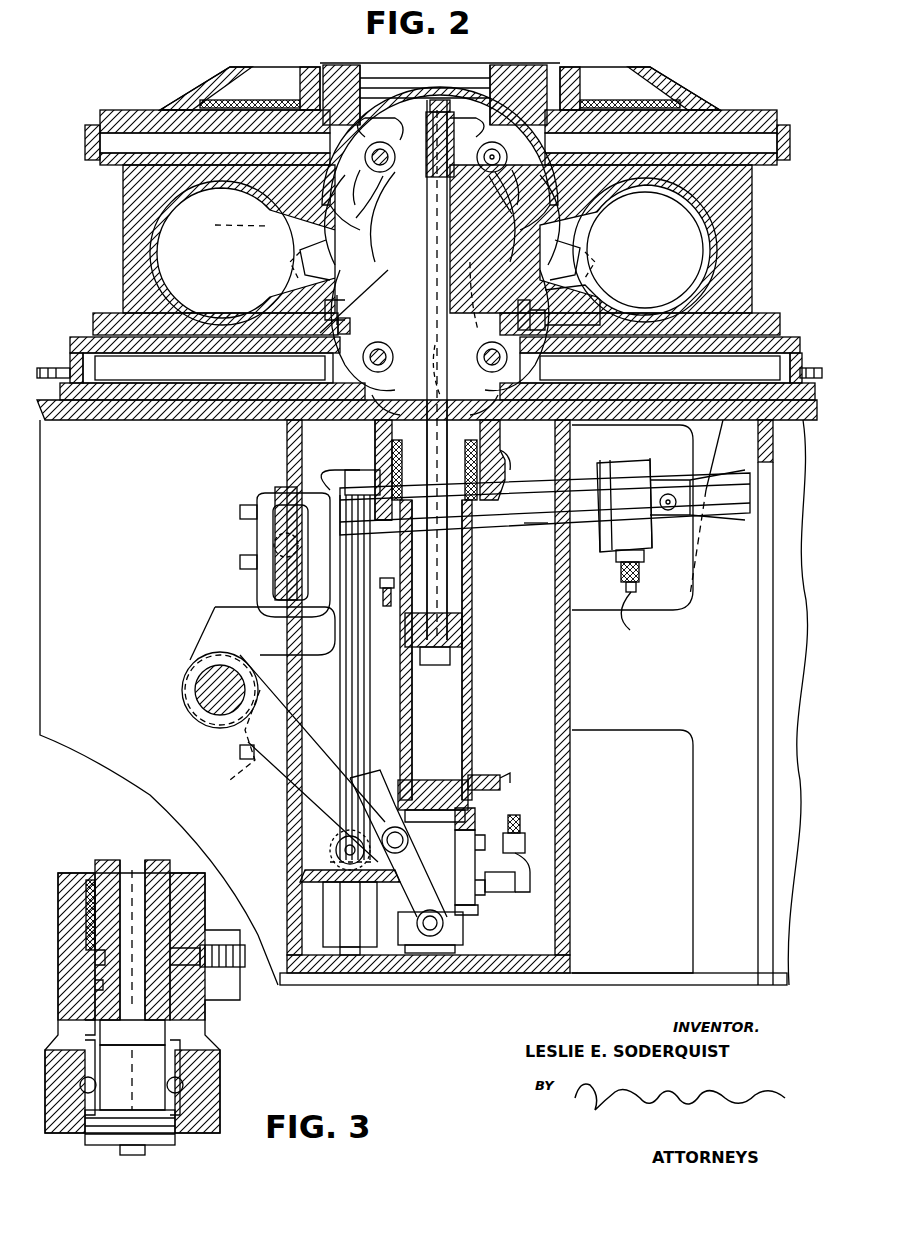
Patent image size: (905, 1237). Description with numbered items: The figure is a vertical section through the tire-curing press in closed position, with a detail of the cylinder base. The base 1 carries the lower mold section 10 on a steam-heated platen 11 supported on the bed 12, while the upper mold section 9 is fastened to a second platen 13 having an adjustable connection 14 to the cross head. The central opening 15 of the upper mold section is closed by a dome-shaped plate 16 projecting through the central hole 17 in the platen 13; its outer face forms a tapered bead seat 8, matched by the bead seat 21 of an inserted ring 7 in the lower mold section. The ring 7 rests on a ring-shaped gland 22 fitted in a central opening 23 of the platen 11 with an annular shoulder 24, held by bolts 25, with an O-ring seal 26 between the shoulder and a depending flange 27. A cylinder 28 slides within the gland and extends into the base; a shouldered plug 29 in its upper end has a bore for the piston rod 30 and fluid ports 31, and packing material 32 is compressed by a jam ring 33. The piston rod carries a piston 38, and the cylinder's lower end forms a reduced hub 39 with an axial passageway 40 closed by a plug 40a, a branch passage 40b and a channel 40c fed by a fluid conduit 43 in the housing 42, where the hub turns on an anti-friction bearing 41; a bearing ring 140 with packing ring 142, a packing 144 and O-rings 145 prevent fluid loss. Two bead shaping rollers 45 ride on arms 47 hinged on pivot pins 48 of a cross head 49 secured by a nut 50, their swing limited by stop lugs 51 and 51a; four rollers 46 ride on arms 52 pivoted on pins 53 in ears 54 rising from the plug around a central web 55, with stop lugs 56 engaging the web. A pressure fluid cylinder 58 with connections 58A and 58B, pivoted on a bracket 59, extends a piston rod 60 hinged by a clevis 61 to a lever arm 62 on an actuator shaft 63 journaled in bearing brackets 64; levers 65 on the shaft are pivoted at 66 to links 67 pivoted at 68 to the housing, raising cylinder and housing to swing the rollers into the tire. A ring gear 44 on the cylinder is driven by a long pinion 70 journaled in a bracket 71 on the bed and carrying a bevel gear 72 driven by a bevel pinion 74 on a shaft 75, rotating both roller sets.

In FIG. 2, the base 1 is at (785, 930).
In FIG. 2, the inserted ring 7 is at (361, 293).
In FIG. 2, the bead seat 8 is at (620, 215).
In FIG. 2, the upper mold section 9 is at (752, 207).
In FIG. 2, the lower mold section 10 is at (123, 292).
In FIG. 2, the steam-heated platen 11 is at (68, 340).
In FIG. 2, the bed 12 is at (40, 440).
In FIG. 2, the second steam-heated platen 13 is at (112, 113).
In FIG. 2, the adjustable connection 14 is at (528, 75).
In FIG. 2, the central opening 15 is at (322, 182).
In FIG. 2, the dome-shaped plate 16 is at (468, 74).
In FIG. 2, the central hole 17 is at (560, 108).
In FIG. 2, the bead seat 21 is at (575, 300).
In FIG. 2, the ring-shaped gland 22 is at (504, 452).
In FIG. 2, the central opening 23 is at (540, 370).
In FIG. 2, the annular shoulder 24 is at (338, 350).
In FIG. 2, the bolts 25 is at (518, 312).
In FIG. 2, the O-ring seal 26 is at (350, 318).
In FIG. 2, the depending flange 27 is at (560, 330).
In FIG. 2, the cylinder 28 is at (472, 696).
In FIG. 2, the shouldered plug 29 is at (378, 420).
In FIG. 2, the piston rod 30 is at (447, 590).
In FIG. 2, the fluid ports 31 is at (392, 445).
In FIG. 2, the packing material 32 is at (480, 470).
In FIG. 2, the jam ring 33 is at (498, 430).
In FIG. 2, the piston 38 is at (462, 633).
In FIG. 2, the hub portion 39 is at (468, 825).
In FIG. 3, the hub portion 39 is at (160, 872).
In FIG. 2, the axial passageway 40 is at (440, 780).
In FIG. 3, the axial passageway 40 is at (132, 885).
In FIG. 2, the plug 40a is at (440, 950).
In FIG. 3, the plug 40a is at (145, 1152).
In FIG. 3, the branch passage 40b is at (165, 948).
In FIG. 3, the channel 40c is at (92, 962).
In FIG. 2, the anti-friction bearing 41 is at (462, 852).
In FIG. 3, the anti-friction bearing 41 is at (185, 1080).
In FIG. 2, the housing 42 is at (465, 906).
In FIG. 3, the housing 42 is at (205, 1020).
In FIG. 2, the fluid conduit 43 is at (500, 893).
In FIG. 3, the fluid conduit 43 is at (240, 970).
In FIG. 2, the ring gear 44 is at (500, 781).
In FIG. 2, the bead shaping rollers 45 is at (300, 255).
In FIG. 2, the bead shaping rollers 46 is at (338, 240).
In FIG. 2, the arms 47 is at (355, 222).
In FIG. 2, the pivot pins 48 is at (380, 170).
In FIG. 2, the cross head 49 is at (452, 152).
In FIG. 2, the nut 50 is at (424, 128).
In FIG. 2, the stop lugs 51 is at (393, 132).
In FIG. 2, the stop lugs 51a is at (488, 172).
In FIG. 2, the arms 52 is at (372, 290).
In FIG. 2, the pins 53 is at (378, 342).
In FIG. 2, the ears 54 is at (488, 300).
In FIG. 2, the central connecting web 55 is at (436, 342).
In FIG. 2, the stop lugs 56 is at (372, 395).
In FIG. 2, the pressure fluid cylinder 58 is at (545, 505).
In FIG. 2, the fluid connection 58A is at (392, 604).
In FIG. 2, the fluid connection 58B is at (647, 594).
In FIG. 2, the bracket 59 is at (702, 485).
In FIG. 2, the piston rod 60 is at (320, 500).
In FIG. 2, the clevis 61 is at (285, 510).
In FIG. 2, the lever arm 62 is at (213, 627).
In FIG. 2, the actuator shaft 63 is at (205, 682).
In FIG. 2, the bearing brackets 64 is at (268, 780).
In FIG. 2, the levers 65 is at (300, 790).
In FIG. 2, the pivot 66 is at (382, 830).
In FIG. 2, the links 67 is at (408, 890).
In FIG. 2, the pivot 68 is at (430, 936).
In FIG. 2, the pinion 70 is at (340, 682).
In FIG. 2, the bracket 71 is at (258, 530).
In FIG. 2, the bevel gear 72 is at (305, 876).
In FIG. 2, the bevel pinion 74 is at (336, 846).
In FIG. 2, the shaft 75 is at (330, 858).
In FIG. 3, the bearing ring 140 is at (170, 1050).
In FIG. 3, the packing ring 142 is at (80, 1052).
In FIG. 3, the packing 144 is at (90, 880).
In FIG. 3, the O-rings 145 is at (100, 955).